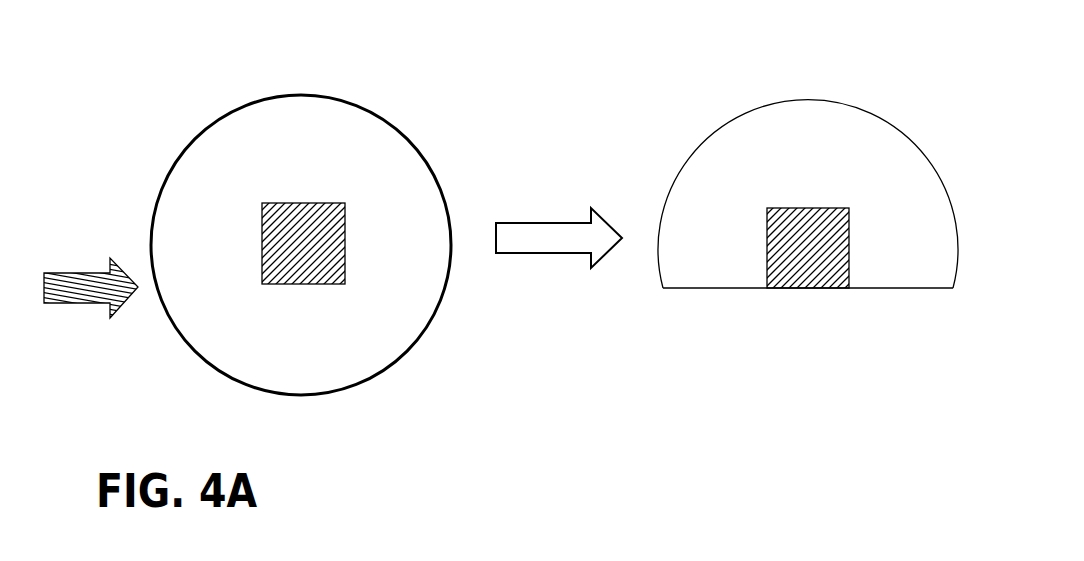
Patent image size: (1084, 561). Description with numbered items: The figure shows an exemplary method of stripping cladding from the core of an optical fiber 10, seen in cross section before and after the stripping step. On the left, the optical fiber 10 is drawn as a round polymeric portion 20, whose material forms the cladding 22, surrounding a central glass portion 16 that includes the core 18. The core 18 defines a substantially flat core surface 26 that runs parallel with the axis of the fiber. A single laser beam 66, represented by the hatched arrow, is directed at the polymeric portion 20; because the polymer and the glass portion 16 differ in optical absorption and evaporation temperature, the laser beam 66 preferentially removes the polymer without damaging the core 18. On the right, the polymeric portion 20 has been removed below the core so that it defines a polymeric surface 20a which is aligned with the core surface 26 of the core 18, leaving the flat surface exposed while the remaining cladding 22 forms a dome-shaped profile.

The optical fiber 10 is at (229, 84).
The glass portion 16 is at (331, 292).
The core 18 is at (273, 203).
The polymeric portion 20 is at (396, 201).
The polymeric surface 20a is at (892, 290).
The cladding 22 is at (325, 138).
The core surface 26 is at (293, 286).
The laser beam 66 is at (65, 273).